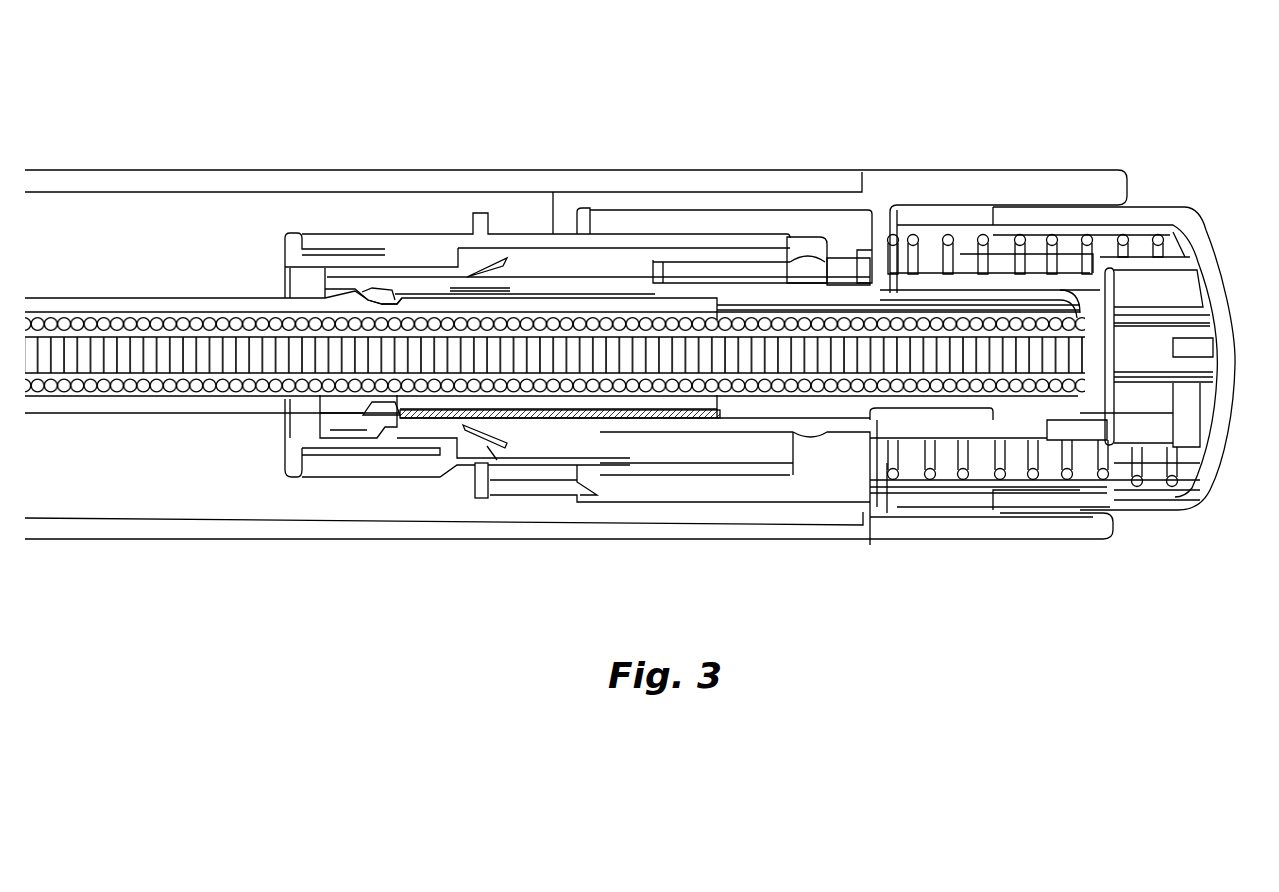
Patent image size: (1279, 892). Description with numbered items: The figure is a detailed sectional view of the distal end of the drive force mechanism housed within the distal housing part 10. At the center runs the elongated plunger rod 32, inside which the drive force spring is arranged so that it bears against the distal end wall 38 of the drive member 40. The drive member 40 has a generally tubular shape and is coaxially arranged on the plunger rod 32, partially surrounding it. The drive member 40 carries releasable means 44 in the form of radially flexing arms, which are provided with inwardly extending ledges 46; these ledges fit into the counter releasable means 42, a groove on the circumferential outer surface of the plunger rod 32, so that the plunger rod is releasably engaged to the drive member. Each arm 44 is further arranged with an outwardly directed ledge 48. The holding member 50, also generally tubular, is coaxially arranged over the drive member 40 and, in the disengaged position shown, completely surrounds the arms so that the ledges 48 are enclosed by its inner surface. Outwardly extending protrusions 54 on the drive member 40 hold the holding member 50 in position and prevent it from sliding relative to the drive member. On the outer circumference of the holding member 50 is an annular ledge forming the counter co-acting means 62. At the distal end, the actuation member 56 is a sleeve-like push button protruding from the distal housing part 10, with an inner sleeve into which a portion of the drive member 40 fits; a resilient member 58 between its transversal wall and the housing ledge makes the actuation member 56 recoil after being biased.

The distal housing part 10 is at (880, 184).
The plunger rod 32 is at (92, 303).
The distal end wall 38 is at (1077, 320).
The drive member 40 is at (538, 285).
The counter releasable means 42 is at (368, 303).
The releasable means 44 is at (422, 285).
The inwardly extending ledges 46 is at (390, 415).
The outwardly directed ledge 48 is at (347, 428).
The holding member 50 is at (657, 243).
The protrusions 54 is at (813, 433).
The actuation member 56 is at (1197, 258).
The resilient member 58 is at (1000, 457).
The counter co-acting means 62 is at (481, 472).